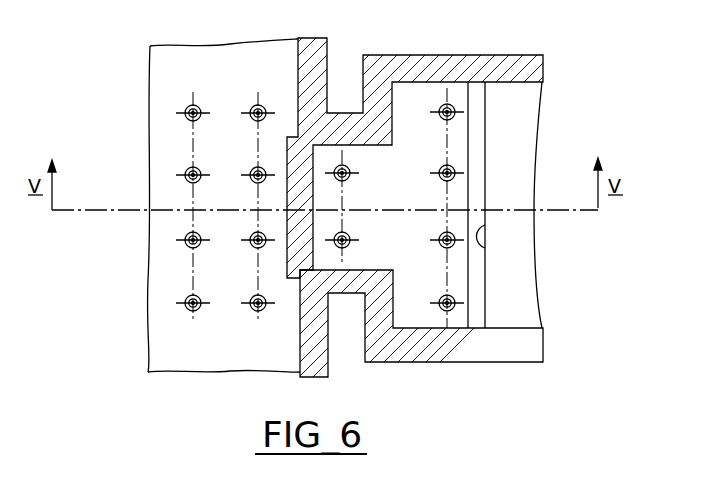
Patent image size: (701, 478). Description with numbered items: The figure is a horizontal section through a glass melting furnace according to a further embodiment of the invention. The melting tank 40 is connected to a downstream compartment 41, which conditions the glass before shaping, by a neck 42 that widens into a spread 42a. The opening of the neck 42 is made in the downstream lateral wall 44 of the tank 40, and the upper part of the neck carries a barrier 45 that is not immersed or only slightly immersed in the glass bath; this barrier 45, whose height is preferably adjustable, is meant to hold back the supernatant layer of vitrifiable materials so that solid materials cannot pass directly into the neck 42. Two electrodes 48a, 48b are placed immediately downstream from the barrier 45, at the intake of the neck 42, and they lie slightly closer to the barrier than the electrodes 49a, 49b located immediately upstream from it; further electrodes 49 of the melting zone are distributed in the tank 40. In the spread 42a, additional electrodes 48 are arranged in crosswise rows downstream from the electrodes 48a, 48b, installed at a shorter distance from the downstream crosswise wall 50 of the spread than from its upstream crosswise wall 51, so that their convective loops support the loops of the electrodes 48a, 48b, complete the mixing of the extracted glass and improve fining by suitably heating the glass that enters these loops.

The melting tank 40 is at (186, 86).
The downstream compartment 41 is at (503, 95).
The neck 42 is at (330, 162).
The spread of the neck 42a is at (433, 103).
The downstream lateral wall 44 is at (305, 342).
The barrier 45 is at (287, 280).
The additional electrodes 48 is at (443, 163).
The downstream electrode 48a is at (351, 173).
The downstream electrode 48b is at (351, 242).
The melting zone electrodes 49 is at (255, 105).
The upstream electrode 49a is at (255, 168).
The upstream electrode 49b is at (256, 234).
The downstream crosswise wall 50 is at (485, 248).
The upstream crosswise wall 51 is at (397, 100).